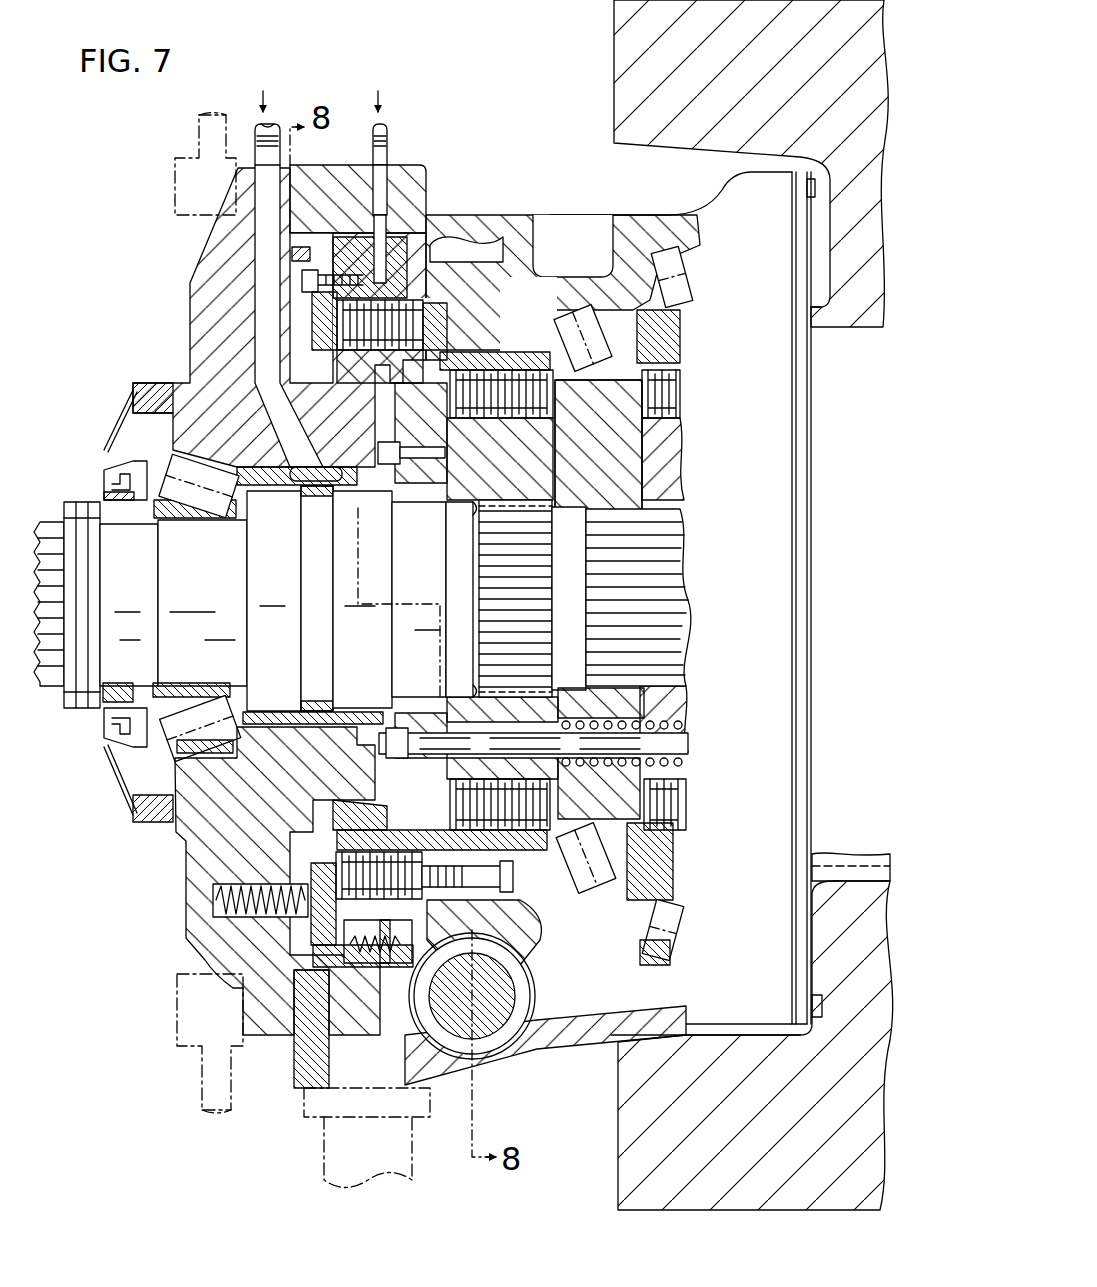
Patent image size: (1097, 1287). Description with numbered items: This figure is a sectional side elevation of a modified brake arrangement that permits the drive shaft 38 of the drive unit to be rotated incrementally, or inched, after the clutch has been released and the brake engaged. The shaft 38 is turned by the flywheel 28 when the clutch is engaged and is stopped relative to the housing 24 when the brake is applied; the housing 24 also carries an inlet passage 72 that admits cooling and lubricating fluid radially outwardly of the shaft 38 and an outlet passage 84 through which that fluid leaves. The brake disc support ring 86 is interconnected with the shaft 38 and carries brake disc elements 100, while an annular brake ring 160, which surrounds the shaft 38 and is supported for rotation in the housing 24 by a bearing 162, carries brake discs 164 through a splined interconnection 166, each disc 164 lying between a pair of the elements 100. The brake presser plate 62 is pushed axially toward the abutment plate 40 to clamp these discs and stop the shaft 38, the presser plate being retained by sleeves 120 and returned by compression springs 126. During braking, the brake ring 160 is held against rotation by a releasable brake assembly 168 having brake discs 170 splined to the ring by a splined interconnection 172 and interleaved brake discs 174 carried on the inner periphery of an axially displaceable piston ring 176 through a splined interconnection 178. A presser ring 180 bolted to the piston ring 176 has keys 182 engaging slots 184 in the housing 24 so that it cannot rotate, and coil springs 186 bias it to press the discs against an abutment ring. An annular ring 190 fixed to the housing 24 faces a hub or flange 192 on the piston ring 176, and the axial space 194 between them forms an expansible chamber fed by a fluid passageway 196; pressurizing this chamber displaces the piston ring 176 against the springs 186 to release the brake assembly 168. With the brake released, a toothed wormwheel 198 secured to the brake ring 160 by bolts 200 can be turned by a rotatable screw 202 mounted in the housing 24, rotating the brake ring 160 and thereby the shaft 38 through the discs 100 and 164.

The flywheel 28 is at (614, 28).
The housing 24 is at (583, 245).
The inlet passage 72 is at (262, 231).
The slots 184 is at (292, 253).
The keys 182 is at (298, 300).
The presser ring 180 is at (330, 323).
The brake ring 160 is at (340, 367).
The bearing 162 is at (303, 403).
The shaft 38 is at (215, 589).
The piston ring 176 is at (334, 186).
The fluid passageway 196 is at (383, 186).
The axial space 194 is at (421, 247).
The brake assembly 168 is at (437, 240).
The toothed wormwheel 198 is at (502, 262).
The splined interconnection 166 is at (505, 365).
The brake discs 164 is at (511, 416).
The brake presser plate 62 is at (423, 450).
The abutment plate 40 is at (617, 437).
The brake disc elements 100 is at (598, 445).
The brake disc support ring 86 is at (543, 487).
The biasing compression springs 126 is at (674, 722).
The sleeves 120 is at (686, 744).
The splined interconnection 172 is at (372, 807).
The brake discs 170 is at (362, 852).
The brake discs 174 is at (345, 845).
The coil springs 186 is at (213, 890).
The splined interconnection 178 is at (233, 963).
The hub or flange 192 is at (338, 970).
The annular ring 190 is at (415, 970).
The outlet passage 84 is at (345, 1095).
The bolts 200 is at (542, 928).
The screw 202 is at (505, 1000).